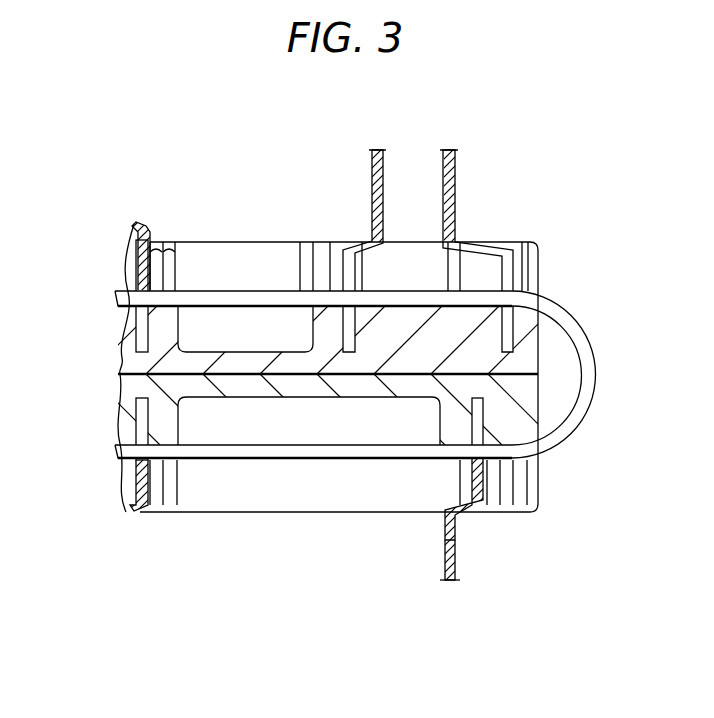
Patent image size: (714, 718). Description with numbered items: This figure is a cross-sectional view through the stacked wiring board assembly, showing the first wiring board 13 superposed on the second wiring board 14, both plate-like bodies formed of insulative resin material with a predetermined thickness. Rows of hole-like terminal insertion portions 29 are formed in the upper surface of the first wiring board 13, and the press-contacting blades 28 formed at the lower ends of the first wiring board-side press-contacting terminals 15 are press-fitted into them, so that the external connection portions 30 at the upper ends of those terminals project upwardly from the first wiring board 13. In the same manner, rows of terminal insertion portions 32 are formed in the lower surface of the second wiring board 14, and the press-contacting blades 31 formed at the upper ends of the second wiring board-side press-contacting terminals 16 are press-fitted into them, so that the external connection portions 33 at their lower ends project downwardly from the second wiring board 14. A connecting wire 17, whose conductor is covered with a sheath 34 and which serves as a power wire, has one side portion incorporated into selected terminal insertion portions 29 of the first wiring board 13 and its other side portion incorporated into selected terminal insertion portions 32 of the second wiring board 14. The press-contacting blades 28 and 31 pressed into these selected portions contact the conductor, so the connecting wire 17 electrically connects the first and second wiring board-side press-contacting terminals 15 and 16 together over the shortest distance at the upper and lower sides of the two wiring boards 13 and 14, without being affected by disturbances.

The first wiring board 13 is at (545, 268).
The second wiring board 14 is at (545, 470).
The first wiring board-side press-contacting terminal 15 is at (372, 165).
The second wiring board-side press-contacting terminal 16 is at (456, 575).
The connecting wire 17 is at (600, 372).
The press-contacting blade 28 is at (152, 318).
The terminal insertion portion 29 is at (388, 296).
The external connection portion 30 is at (373, 200).
The press-contacting blade 31 is at (128, 440).
The terminal insertion portion 32 is at (160, 427).
The external connection portion 33 is at (456, 540).
The sheath 34 is at (590, 353).